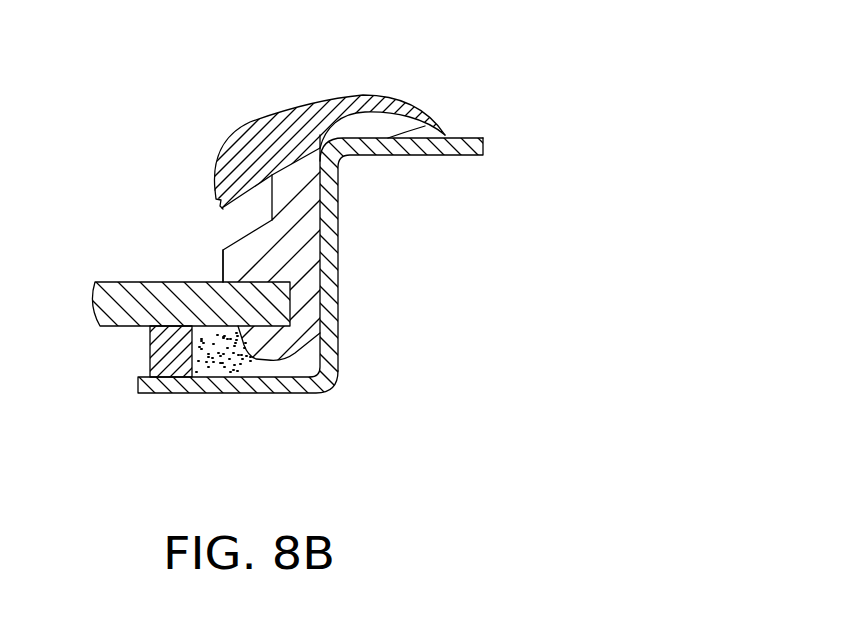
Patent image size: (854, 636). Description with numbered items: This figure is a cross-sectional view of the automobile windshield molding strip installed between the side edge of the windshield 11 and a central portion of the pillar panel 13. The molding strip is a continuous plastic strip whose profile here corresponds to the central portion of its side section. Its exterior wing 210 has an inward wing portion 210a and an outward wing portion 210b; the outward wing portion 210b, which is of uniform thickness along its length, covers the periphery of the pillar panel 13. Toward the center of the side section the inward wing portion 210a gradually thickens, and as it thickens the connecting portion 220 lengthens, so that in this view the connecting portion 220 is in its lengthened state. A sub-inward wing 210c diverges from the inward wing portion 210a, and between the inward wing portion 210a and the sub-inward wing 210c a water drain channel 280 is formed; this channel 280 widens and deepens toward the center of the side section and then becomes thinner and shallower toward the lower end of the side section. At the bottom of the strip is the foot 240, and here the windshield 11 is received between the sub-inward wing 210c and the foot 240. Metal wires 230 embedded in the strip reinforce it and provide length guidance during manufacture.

The windshield 11 is at (112, 327).
The pillar panel 13 is at (283, 392).
The exterior wing 210 is at (253, 127).
The inward wing portion 210a is at (242, 172).
The outward wing portion 210b is at (417, 108).
The sub-inward wing 210c is at (237, 262).
The connecting portion 220 is at (295, 176).
The metal wires 230 is at (300, 249).
The foot 240 is at (312, 350).
The water drain channel 280 is at (243, 220).